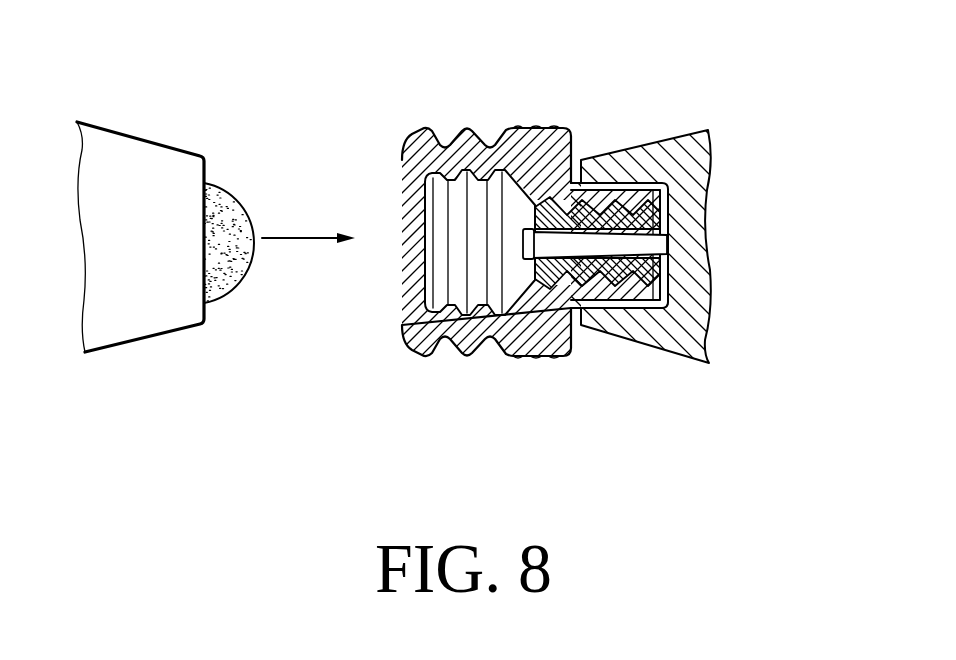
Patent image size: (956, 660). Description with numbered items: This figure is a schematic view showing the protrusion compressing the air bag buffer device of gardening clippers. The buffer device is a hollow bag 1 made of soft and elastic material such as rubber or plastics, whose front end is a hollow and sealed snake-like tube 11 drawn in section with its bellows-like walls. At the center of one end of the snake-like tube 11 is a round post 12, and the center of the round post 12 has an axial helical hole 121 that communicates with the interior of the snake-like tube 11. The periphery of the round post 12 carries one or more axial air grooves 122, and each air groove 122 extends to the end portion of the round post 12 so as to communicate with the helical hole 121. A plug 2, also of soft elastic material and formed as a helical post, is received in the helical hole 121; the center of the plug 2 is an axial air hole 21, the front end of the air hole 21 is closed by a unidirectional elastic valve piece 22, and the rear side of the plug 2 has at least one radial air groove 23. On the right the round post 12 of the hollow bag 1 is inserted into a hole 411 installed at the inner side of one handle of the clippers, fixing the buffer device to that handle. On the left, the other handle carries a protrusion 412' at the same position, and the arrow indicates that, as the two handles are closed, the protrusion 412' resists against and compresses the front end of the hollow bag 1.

The hollow bag 1 is at (489, 221).
The snake-like tube 11 is at (422, 125).
The round post 12 is at (612, 182).
The helical hole 121 is at (617, 308).
The air groove 122 is at (664, 310).
The plug 2 is at (618, 238).
The air hole 21 is at (641, 328).
The unidirectional elastic valve piece 22 is at (522, 258).
The radial air groove 23 is at (667, 273).
The hole 411 is at (647, 167).
The protrusion 412' is at (240, 174).